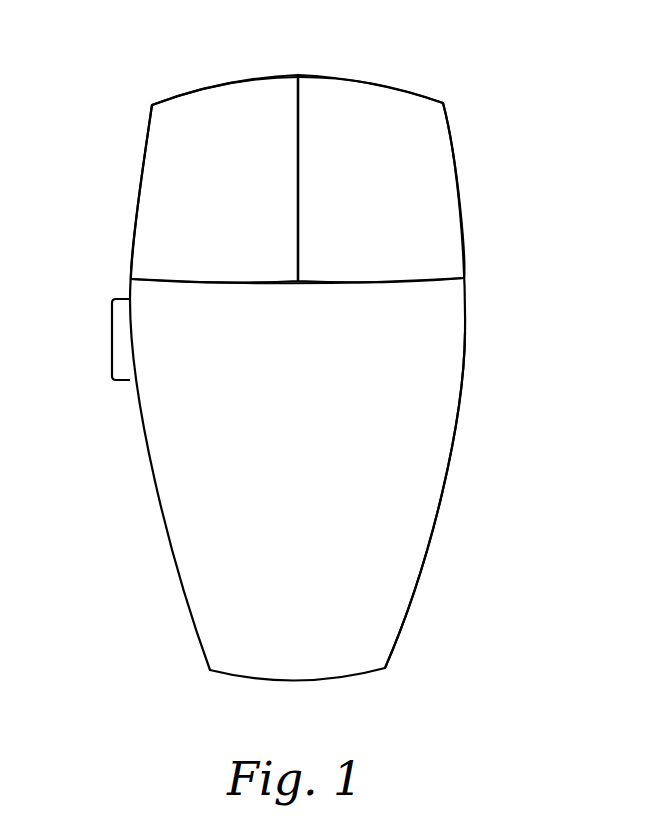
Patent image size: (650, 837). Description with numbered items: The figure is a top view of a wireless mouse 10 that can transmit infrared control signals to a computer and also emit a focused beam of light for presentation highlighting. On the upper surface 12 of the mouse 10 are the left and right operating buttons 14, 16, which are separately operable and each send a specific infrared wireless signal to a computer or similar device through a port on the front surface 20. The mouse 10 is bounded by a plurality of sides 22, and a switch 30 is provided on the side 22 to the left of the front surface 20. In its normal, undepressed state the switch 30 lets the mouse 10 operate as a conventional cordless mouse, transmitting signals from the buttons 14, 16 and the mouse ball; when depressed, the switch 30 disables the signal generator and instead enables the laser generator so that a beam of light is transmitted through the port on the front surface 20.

The wireless mouse 10 is at (518, 103).
The upper surface 12 is at (443, 440).
The left operating button 14 is at (150, 216).
The right operating button 16 is at (447, 213).
The front surface 20 is at (265, 75).
The sides 22 is at (465, 333).
The switch 30 is at (115, 352).